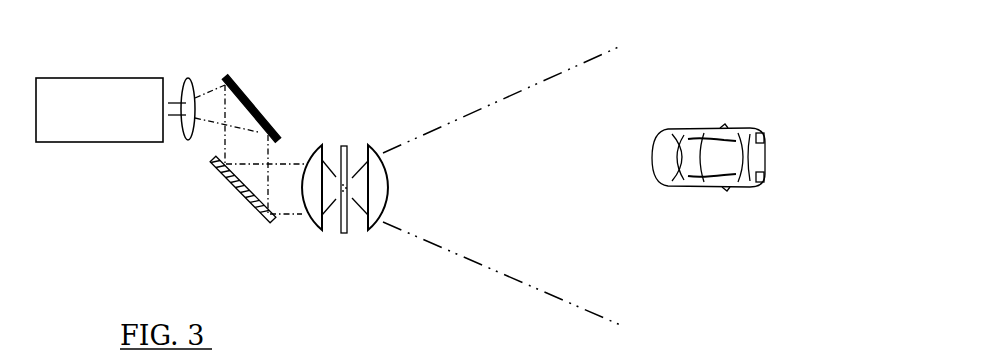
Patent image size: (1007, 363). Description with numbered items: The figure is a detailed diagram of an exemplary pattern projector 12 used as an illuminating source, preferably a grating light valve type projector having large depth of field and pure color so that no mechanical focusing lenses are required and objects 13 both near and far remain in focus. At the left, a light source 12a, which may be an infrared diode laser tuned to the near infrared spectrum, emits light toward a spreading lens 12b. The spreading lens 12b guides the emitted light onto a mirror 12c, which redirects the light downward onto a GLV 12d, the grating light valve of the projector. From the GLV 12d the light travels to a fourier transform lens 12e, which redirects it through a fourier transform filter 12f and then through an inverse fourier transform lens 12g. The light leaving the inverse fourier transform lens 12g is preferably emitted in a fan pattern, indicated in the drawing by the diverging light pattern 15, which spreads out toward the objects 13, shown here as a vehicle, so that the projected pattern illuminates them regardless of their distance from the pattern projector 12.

The pattern projector 12 is at (268, 38).
The light source 12a is at (100, 77).
The spreading lens 12b is at (186, 78).
The mirror 12c is at (254, 105).
The GLV 12d is at (240, 190).
The fourier transform lens 12e is at (310, 228).
The fourier transform filter 12f is at (343, 234).
The inverse fourier transform lens 12g is at (370, 231).
The objects 13 is at (708, 131).
The light pattern 15 is at (456, 258).